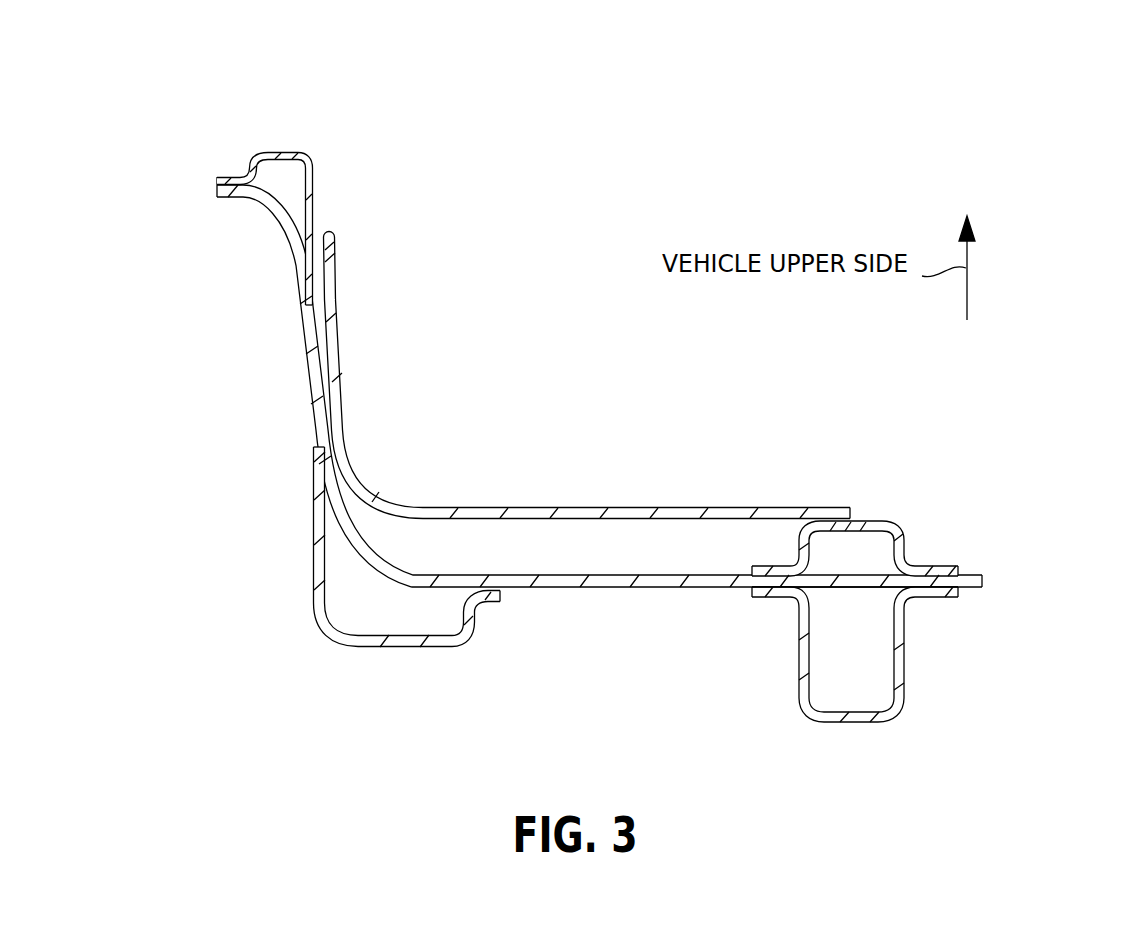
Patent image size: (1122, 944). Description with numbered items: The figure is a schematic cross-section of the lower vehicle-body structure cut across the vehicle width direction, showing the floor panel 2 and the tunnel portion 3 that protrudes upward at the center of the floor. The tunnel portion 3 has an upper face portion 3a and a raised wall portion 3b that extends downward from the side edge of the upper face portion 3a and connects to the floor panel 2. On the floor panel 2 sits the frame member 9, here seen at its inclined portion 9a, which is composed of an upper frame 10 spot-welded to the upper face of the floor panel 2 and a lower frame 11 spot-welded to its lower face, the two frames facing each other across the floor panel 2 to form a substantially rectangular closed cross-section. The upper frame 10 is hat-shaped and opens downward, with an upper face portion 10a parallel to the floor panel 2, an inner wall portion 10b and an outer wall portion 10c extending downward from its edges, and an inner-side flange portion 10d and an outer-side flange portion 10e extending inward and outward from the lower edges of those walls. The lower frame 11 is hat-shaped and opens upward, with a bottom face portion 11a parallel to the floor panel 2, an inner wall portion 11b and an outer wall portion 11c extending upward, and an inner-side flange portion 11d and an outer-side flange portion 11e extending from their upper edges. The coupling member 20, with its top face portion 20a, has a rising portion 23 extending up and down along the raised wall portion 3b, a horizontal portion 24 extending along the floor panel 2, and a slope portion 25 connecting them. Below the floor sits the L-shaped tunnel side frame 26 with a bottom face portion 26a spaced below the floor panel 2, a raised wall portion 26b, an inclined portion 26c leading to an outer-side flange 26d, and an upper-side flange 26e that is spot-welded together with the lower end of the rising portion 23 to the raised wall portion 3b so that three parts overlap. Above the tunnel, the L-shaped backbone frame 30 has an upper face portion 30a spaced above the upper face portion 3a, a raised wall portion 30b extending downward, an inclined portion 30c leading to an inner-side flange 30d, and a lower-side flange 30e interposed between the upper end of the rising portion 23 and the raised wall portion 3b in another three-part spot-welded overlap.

The floor panel 2 is at (607, 590).
The tunnel portion 3 is at (268, 198).
The upper face portion 3a is at (233, 199).
The raised wall portion 3b is at (315, 410).
The frame member 9 is at (853, 517).
The inclined portion 9a is at (862, 519).
The upper frame 10 is at (903, 531).
The upper face portion 10a is at (900, 517).
The inner wall portion 10b is at (796, 540).
The outer wall portion 10c is at (907, 560).
The inner-side flange portion 10d is at (762, 568).
The outer-side flange portion 10e is at (960, 570).
The lower frame 11 is at (897, 707).
The bottom face portion 11a is at (848, 723).
The inner wall portion 11b is at (797, 633).
The outer wall portion 11c is at (905, 640).
The inner-side flange portion 11d is at (757, 600).
The outer-side flange portion 11e is at (945, 600).
The coupling member 20 is at (584, 508).
The top face portion 20a is at (490, 505).
The rising portion 23 is at (337, 345).
The horizontal portion 24 is at (550, 508).
The slope portion 25 is at (402, 493).
The tunnel side frame 26 is at (372, 648).
The bottom face portion 26a is at (430, 648).
The raised wall portion 26b is at (313, 560).
The inclined portion 26c is at (478, 622).
The outer-side flange 26d is at (495, 602).
The upper-side flange 26e is at (312, 452).
The backbone frame 30 is at (292, 152).
The upper face portion 30a is at (256, 150).
The raised wall portion 30b is at (316, 172).
The inclined portion 30c is at (258, 168).
The inner-side flange 30d is at (216, 178).
The lower-side flange 30e is at (325, 240).